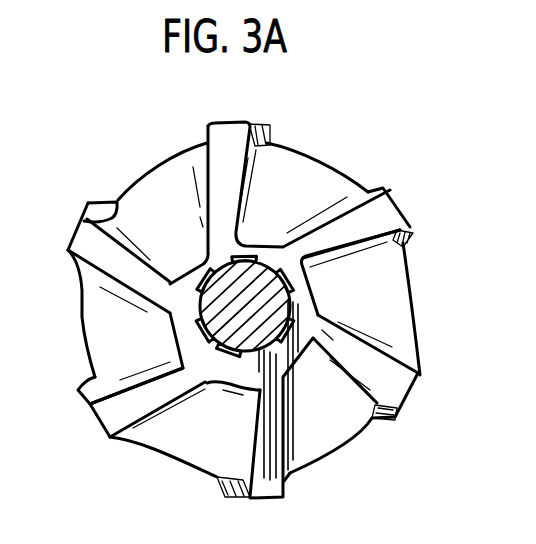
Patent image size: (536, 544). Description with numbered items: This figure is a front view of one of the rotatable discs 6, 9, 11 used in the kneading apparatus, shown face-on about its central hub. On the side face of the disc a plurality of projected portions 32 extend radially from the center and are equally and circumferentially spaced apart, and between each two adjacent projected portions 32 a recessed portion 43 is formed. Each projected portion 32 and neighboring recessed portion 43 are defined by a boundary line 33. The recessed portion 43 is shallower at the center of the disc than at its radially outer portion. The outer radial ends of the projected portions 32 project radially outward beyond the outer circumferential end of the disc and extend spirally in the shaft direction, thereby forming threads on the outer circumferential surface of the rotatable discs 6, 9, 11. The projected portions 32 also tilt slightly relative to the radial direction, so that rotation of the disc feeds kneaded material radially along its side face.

The rotatable disc 6 is at (375, 164).
The rotatable disc 9 is at (375, 164).
The rotatable disc 11 is at (335, 168).
The projected portion 32 is at (272, 140).
The boundary line 33 is at (392, 347).
The recessed portion 43 is at (178, 233).